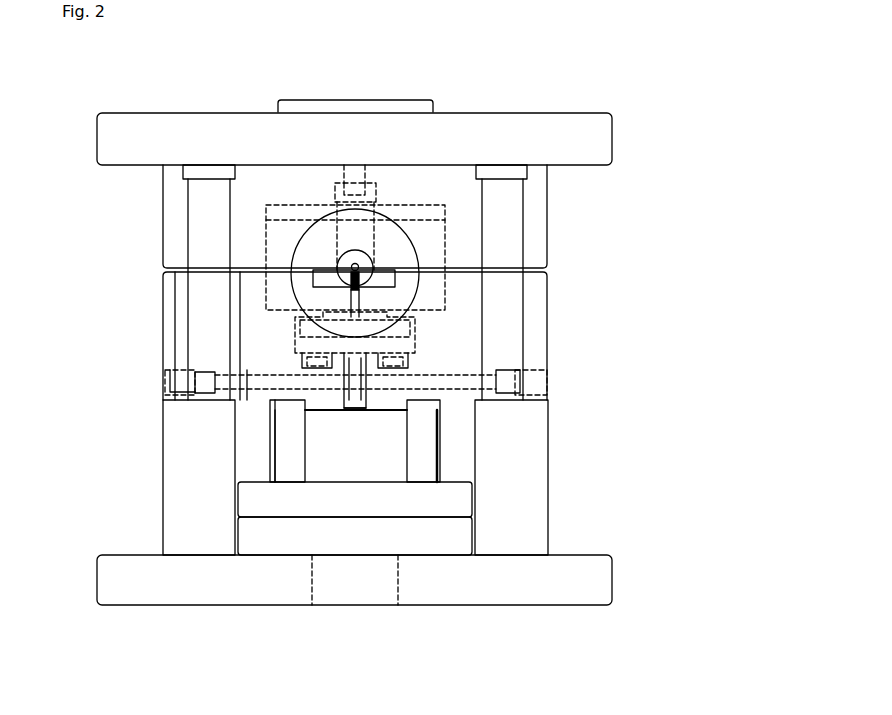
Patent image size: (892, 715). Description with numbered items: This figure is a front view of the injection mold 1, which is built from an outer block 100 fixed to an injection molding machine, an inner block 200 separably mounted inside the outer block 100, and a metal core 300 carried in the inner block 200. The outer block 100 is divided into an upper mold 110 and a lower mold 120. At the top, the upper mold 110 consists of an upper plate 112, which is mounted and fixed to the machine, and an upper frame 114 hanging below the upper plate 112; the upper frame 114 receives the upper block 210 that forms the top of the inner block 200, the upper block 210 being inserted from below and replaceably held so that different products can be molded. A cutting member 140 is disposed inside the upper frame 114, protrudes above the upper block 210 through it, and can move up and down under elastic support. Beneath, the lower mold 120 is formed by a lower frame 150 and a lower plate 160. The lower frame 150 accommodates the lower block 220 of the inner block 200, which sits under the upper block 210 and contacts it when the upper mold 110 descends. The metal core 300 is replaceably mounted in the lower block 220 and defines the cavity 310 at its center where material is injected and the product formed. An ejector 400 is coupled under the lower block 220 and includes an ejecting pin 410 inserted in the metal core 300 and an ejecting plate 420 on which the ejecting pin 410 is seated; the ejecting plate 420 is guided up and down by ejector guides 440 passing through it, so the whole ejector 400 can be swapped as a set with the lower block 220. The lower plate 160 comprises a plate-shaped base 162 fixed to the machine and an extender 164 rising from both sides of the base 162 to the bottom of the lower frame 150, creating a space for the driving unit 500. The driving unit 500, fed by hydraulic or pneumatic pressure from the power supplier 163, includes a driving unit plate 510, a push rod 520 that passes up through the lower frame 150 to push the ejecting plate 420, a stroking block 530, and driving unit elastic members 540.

The injection mold 1 is at (613, 82).
The outer block 100 is at (710, 210).
The upper mold 110 is at (658, 190).
The upper plate 112 is at (573, 153).
The upper frame 114 is at (538, 234).
The lower mold 120 is at (657, 377).
The cutting member 140 is at (345, 240).
The lower frame 150 is at (537, 347).
The lower plate 160 is at (608, 415).
The base 162 is at (570, 568).
The power supplier 163 is at (382, 588).
The extender 164 is at (528, 430).
The inner block 200 is at (605, 247).
The upper block 210 is at (437, 252).
The lower block 220 is at (440, 298).
The metal core 300 is at (343, 272).
The cavity 310 is at (350, 290).
The ejector 400 is at (113, 340).
The ejecting pin 410 is at (347, 298).
The ejecting plate 420 is at (312, 336).
The ejector guide 440 is at (298, 362).
The driving unit 500 is at (370, 665).
The driving unit plate 510 is at (289, 537).
The push rod 520 is at (357, 412).
The stroking block 530 is at (328, 472).
The driving unit elastic member 540 is at (283, 472).